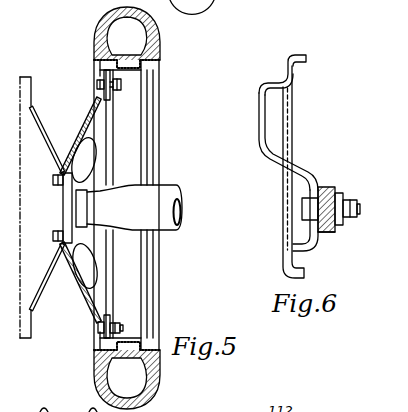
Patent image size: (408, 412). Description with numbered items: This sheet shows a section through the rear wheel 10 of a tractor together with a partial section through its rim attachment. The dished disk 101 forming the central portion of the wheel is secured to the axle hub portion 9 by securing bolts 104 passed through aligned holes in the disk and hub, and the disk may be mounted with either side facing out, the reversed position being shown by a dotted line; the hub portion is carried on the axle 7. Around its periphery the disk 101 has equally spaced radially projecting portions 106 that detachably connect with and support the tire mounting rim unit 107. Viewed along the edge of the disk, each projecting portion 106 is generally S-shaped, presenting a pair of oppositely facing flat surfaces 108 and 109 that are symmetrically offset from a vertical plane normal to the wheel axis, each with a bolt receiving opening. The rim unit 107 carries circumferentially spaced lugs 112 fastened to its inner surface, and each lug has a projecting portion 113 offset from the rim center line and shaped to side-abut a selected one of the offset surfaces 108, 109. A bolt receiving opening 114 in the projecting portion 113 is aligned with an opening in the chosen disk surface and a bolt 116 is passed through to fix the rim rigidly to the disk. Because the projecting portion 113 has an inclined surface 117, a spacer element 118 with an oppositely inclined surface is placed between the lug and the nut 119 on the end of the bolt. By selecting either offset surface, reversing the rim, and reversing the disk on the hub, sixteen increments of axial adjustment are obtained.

In FIG. 5, the tubular handle / axle member 7 is at (168, 186).
In FIG. 5, the axle hub portion 9 is at (63, 205).
In FIG. 5, the rear wheel 10 is at (94, 376).
In FIG. 5, the disk-like central portion (disk) 101 is at (42, 282).
In FIG. 5, the securing bolts 104 is at (58, 240).
In FIG. 6, the radially projecting portions 106 is at (268, 87).
In FIG. 5, the tire mounting rim unit 107 is at (152, 59).
In FIG. 6, the flat surface 108 is at (321, 187).
In FIG. 6, the flat surface 109 is at (258, 120).
In FIG. 5, the lugs 112 is at (130, 69).
In FIG. 6, the lugs 112 is at (328, 233).
In FIG. 5, the projecting portion of lug 113 is at (106, 80).
In FIG. 5, the bolt receiving opening 114 is at (108, 322).
In FIG. 5, the bolt 116 is at (97, 87).
In FIG. 6, the bolt 116 is at (302, 209).
In FIG. 5, the inclined surface 117 is at (117, 90).
In FIG. 5, the spacer element 118 is at (119, 321).
In FIG. 6, the spacer element 118 is at (341, 198).
In FIG. 5, the nut 119 is at (122, 330).
In FIG. 6, the nut 119 is at (350, 218).